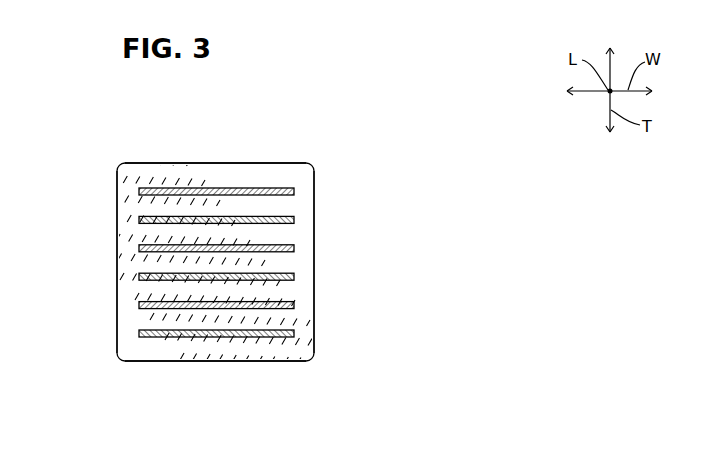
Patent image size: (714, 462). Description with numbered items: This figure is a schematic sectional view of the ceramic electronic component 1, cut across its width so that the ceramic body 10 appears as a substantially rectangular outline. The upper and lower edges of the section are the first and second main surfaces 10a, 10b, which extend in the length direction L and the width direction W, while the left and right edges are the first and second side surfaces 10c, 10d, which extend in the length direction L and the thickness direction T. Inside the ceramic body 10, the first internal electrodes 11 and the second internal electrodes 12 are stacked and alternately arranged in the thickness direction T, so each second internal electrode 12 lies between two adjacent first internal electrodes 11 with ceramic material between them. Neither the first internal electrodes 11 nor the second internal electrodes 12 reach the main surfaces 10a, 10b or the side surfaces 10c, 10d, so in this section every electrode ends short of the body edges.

The ceramic electronic component 1 is at (377, 120).
The ceramic body 10 is at (221, 161).
The first main surface 10a is at (170, 163).
The second main surface 10b is at (215, 362).
The first side surface 10c is at (117, 250).
The second side surface 10d is at (315, 270).
The first internal electrode 11 is at (262, 186).
The second internal electrode 12 is at (302, 206).